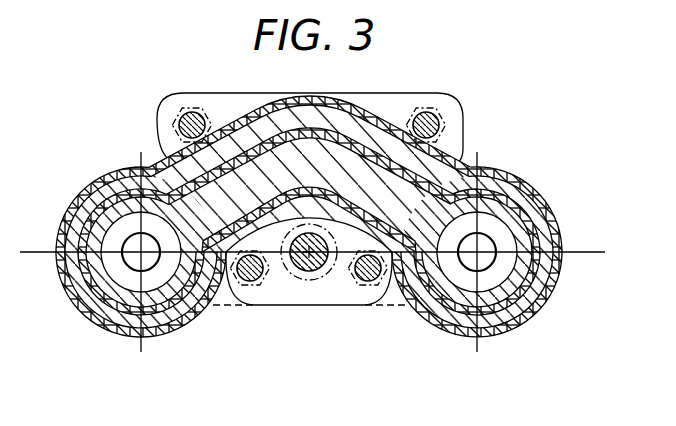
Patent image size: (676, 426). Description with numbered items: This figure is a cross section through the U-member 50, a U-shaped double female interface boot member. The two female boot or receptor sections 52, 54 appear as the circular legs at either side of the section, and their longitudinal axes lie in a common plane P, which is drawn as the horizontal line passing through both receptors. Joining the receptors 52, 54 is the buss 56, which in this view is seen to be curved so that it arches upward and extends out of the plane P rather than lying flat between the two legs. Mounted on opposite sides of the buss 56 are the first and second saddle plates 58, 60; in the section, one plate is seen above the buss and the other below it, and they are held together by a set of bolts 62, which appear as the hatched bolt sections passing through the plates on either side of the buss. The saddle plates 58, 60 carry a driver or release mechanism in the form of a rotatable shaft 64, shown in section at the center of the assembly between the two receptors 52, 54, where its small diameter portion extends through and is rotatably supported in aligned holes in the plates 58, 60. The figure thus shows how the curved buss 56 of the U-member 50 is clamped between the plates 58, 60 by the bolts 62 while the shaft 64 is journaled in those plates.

The U-member 50 is at (333, 217).
The female boot or receptor section 52 is at (530, 320).
The female boot or receptor section 54 is at (98, 325).
The buss 56 is at (360, 162).
The first saddle plate 58 is at (223, 300).
The second saddle plate 60 is at (295, 306).
The bolts 62 is at (186, 116).
The rotatable shaft 64 is at (320, 278).
The plane P is at (585, 256).